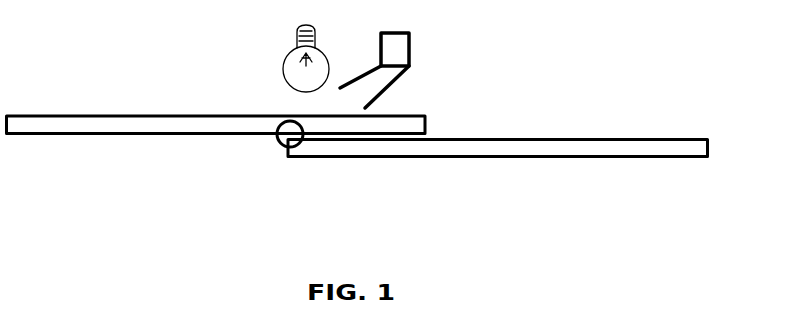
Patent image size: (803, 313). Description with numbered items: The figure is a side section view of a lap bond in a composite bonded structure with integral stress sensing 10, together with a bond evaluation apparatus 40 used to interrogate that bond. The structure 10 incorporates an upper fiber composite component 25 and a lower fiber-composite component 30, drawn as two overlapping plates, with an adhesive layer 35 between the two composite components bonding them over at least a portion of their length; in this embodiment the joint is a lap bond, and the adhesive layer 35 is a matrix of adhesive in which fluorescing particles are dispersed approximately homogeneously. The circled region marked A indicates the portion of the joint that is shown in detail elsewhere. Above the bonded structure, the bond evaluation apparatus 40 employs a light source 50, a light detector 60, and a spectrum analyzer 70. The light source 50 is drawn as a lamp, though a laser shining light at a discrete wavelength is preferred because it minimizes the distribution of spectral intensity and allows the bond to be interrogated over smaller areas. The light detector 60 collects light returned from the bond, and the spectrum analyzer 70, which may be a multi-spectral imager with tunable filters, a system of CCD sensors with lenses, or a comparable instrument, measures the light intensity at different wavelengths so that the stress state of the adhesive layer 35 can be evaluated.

The composite bonded structure with integral stress sensing 10 is at (140, 65).
The upper fiber composite component 25 is at (227, 113).
The lower fiber-composite component 30 is at (575, 158).
The adhesive layer 35 is at (427, 135).
The bond evaluation apparatus 40 is at (438, 63).
The light source 50 is at (284, 64).
The light detector 60 is at (375, 90).
The spectrum analyzer 70 is at (412, 43).
The detail region A is at (282, 147).